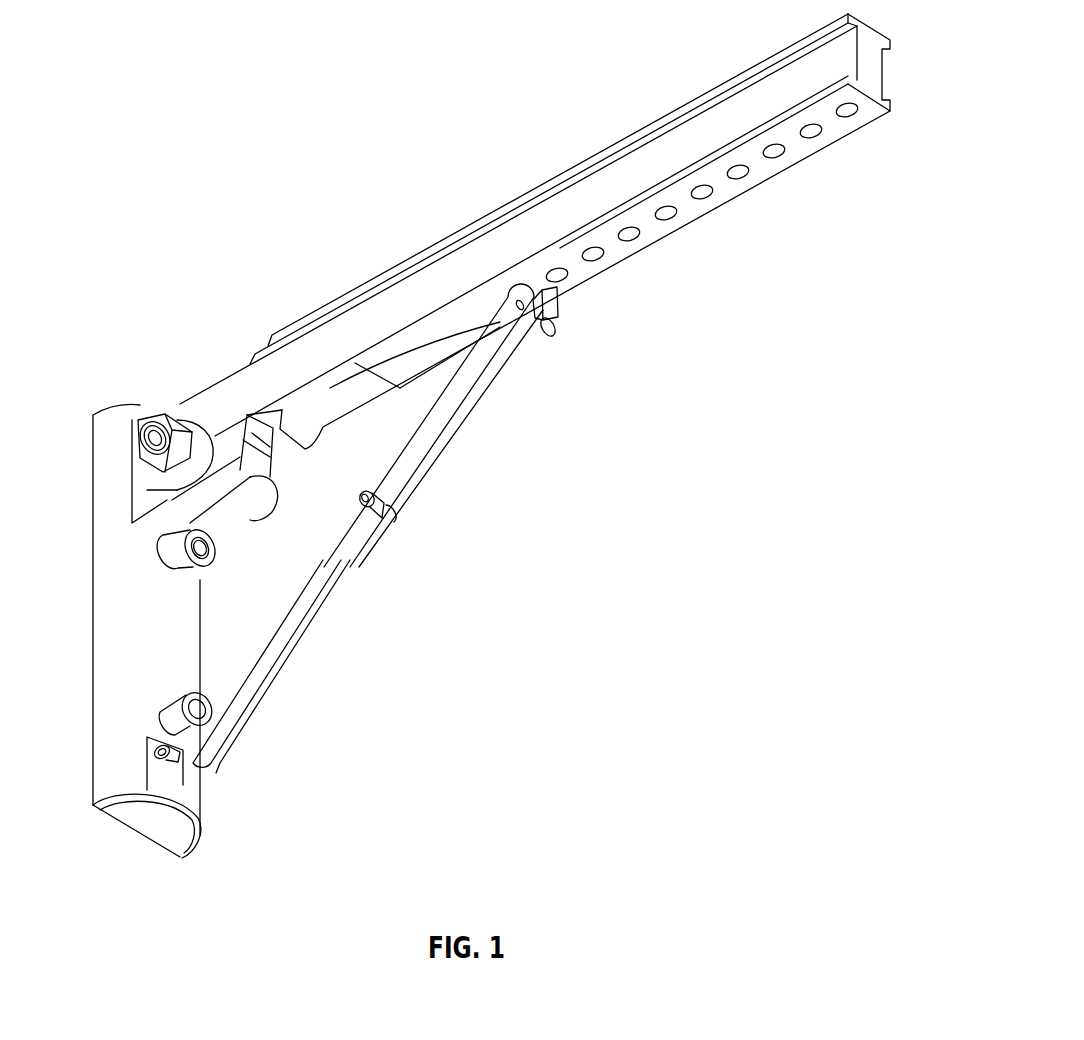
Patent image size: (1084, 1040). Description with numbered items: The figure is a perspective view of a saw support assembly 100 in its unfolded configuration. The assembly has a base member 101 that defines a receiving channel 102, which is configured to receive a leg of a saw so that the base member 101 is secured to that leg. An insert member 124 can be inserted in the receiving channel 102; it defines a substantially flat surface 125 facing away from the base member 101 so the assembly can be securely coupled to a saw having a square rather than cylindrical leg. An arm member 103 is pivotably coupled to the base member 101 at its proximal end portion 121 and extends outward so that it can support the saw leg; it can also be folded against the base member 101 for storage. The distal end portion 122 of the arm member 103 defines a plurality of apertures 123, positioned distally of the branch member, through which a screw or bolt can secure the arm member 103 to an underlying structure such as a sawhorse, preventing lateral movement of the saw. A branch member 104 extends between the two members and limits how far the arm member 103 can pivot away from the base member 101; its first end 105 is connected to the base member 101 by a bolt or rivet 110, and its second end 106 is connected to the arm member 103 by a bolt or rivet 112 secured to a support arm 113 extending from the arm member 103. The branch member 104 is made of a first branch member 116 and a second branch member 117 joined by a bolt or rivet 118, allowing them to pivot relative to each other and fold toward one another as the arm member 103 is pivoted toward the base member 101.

The saw support assembly 100 is at (140, 92).
The base member 101 is at (148, 612).
The receiving channel 102 is at (143, 855).
The arm member 103 is at (866, 70).
The branch member 104 is at (436, 481).
The first end 105 is at (226, 731).
The second end 106 is at (500, 343).
The bolt or rivet 110 is at (157, 750).
The bolt or rivet 112 is at (552, 326).
The support arm 113 is at (560, 294).
The first branch member 116 is at (298, 628).
The second branch member 117 is at (458, 395).
The bolt or rivet 118 is at (397, 513).
The proximal end portion 121 is at (220, 388).
The distal end portion 122 is at (807, 73).
The apertures 123 is at (868, 115).
The insert member 124 is at (177, 833).
The flat surface 125 is at (105, 812).